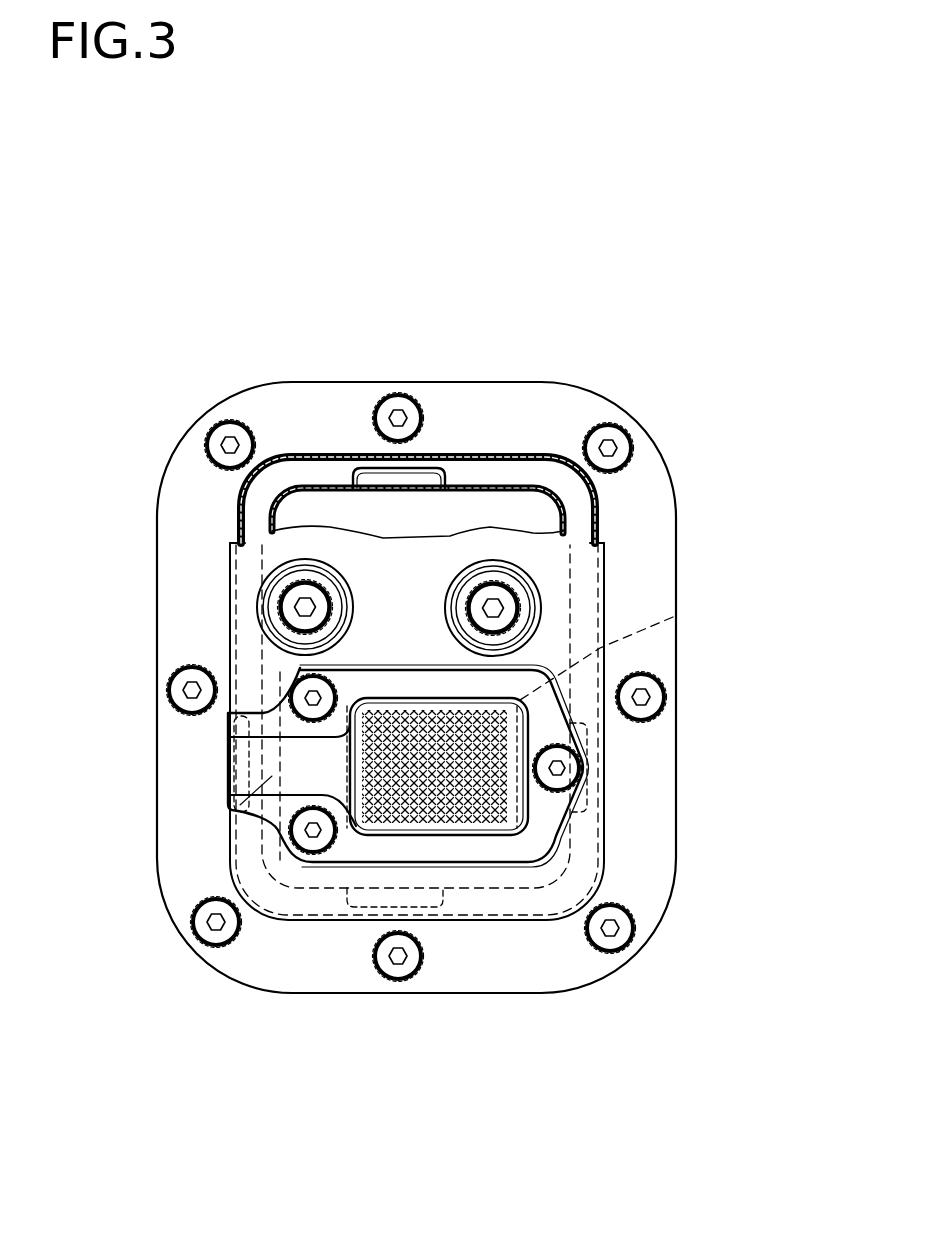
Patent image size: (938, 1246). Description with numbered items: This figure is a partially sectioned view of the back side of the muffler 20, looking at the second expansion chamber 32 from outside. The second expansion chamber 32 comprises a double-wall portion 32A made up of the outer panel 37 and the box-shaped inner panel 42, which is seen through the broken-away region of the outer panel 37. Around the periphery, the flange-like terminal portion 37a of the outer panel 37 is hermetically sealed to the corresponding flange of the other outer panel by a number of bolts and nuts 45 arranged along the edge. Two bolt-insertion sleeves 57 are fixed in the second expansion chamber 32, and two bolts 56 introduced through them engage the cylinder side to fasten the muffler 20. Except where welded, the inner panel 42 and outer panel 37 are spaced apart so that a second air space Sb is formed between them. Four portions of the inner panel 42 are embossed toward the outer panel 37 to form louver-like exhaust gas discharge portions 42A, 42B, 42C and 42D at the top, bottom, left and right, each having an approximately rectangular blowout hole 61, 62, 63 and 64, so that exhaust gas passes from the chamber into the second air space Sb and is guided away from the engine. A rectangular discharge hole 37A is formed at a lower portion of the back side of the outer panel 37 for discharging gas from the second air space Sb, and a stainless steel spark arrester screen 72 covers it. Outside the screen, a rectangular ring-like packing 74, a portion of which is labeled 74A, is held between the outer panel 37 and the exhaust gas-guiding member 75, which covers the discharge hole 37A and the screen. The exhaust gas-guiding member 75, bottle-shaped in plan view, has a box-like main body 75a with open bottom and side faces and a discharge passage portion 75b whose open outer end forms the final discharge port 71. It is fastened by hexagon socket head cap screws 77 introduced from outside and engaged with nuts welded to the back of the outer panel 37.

The muffler 20 is at (531, 346).
The second expansion chamber 32 is at (331, 509).
The double-wall portion 32A is at (227, 547).
The outer panel 37 is at (590, 580).
The flange-like terminal portion 37a is at (637, 503).
The discharge hole 37A is at (497, 840).
The inner panel 42 is at (238, 493).
The exhaust gas discharge portion 42A is at (367, 455).
The exhaust gas discharge portion 42B is at (372, 905).
The exhaust gas discharge portion 42C is at (222, 778).
The exhaust gas discharge portion 42D is at (590, 741).
The bolts and nuts 45 is at (212, 440).
The bolts 56 is at (316, 594).
The bolt-insertion sleeves 57 is at (258, 600).
The blowout hole 61 is at (421, 477).
The blowout hole 62 is at (430, 850).
The blowout hole 63 is at (232, 727).
The blowout hole 64 is at (583, 810).
The final discharge port 71 is at (225, 758).
The spark arrester screen 72 is at (673, 617).
The packing 74 is at (458, 835).
The mesh frame 74A is at (465, 835).
The exhaust gas-guiding member 75 is at (368, 823).
The main body 75a is at (520, 820).
The discharge passage portion 75b is at (228, 803).
The hexagon socket head cap screws 77 is at (293, 677).
The second air space Sb is at (490, 478).